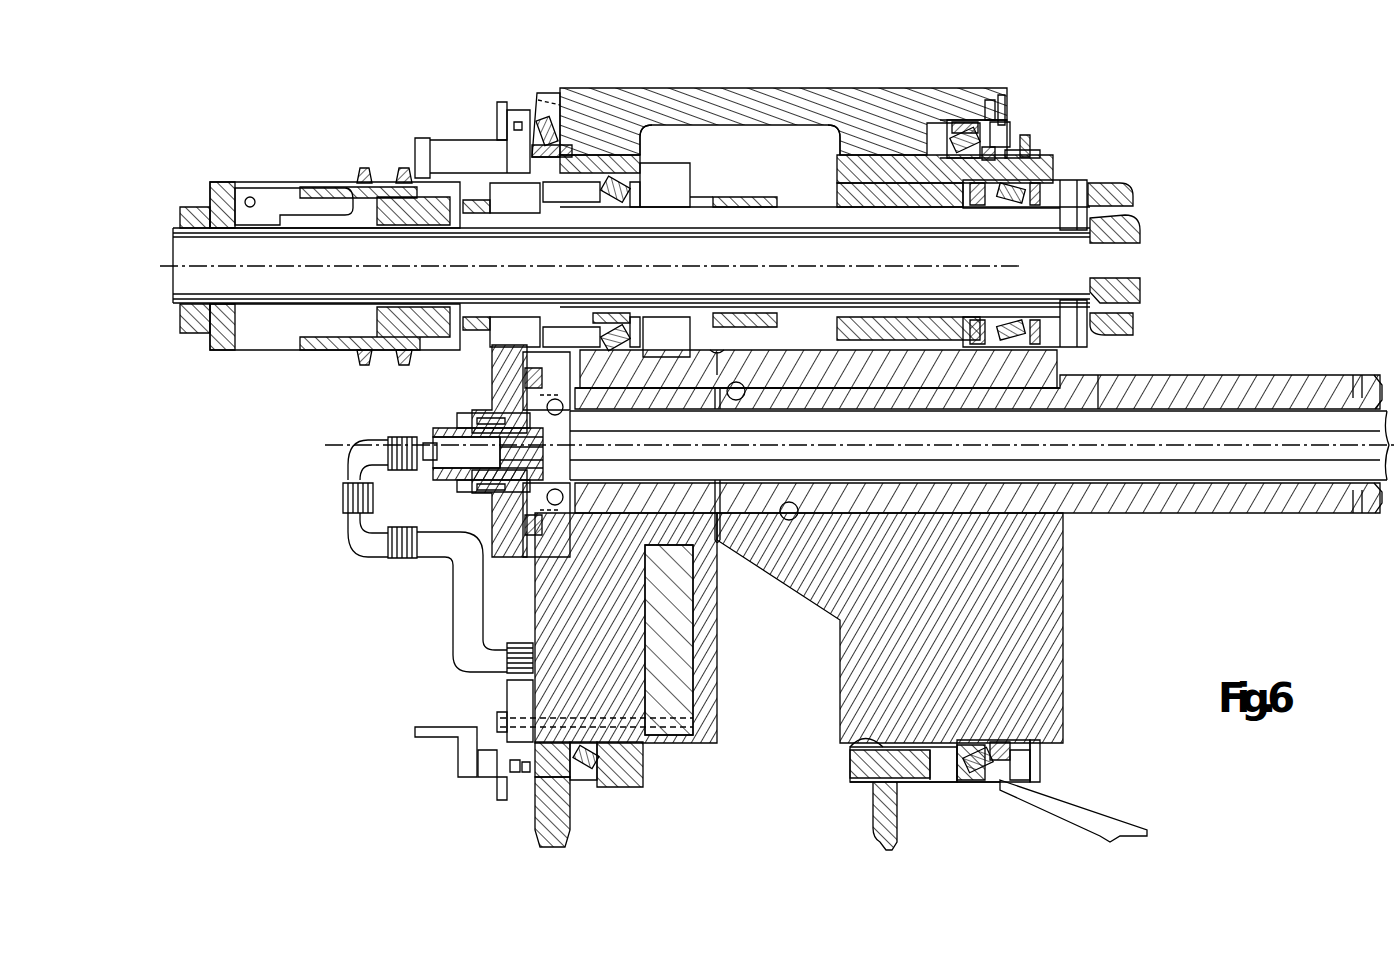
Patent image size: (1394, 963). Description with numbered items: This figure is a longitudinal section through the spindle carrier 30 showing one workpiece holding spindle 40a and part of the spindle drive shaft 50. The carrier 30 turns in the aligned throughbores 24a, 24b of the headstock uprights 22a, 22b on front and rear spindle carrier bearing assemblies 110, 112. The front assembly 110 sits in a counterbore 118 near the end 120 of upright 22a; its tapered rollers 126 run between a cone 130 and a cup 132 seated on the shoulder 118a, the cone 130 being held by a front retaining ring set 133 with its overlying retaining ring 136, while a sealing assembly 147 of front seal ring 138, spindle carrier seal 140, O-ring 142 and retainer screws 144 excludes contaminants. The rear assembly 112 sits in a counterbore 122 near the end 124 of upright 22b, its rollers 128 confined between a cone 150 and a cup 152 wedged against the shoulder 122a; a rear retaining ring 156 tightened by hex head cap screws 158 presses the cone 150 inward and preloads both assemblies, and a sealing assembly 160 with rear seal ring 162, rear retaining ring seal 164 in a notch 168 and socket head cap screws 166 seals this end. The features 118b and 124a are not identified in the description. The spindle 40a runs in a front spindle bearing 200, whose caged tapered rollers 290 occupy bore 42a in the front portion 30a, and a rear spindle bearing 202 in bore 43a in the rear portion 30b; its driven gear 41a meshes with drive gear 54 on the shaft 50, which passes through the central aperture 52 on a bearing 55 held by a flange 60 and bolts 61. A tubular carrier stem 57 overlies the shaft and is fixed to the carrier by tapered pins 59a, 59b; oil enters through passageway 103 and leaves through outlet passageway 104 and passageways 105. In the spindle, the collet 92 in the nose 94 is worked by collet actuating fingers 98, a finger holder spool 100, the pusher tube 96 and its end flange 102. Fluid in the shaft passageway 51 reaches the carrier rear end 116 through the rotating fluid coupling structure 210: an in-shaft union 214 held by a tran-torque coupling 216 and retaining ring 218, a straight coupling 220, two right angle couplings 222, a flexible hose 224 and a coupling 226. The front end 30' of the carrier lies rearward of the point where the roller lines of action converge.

The upright 22a is at (862, 117).
The upright 22b is at (623, 112).
The throughbore 24a is at (877, 735).
The throughbore 24b is at (640, 160).
The spindle carrier 30 is at (856, 424).
The front end of the spindle carrier 30' is at (1089, 545).
The front portion of the spindle carrier 30a is at (1042, 152).
The rear portion of the spindle carrier 30b is at (700, 168).
The spindle 40a is at (320, 165).
The driven gear 41a is at (512, 195).
The bore 42a is at (875, 157).
The bore 43a is at (622, 195).
The spindle drive shaft 50 is at (1268, 375).
The passageway 51 is at (1180, 450).
The central aperture 52 is at (890, 385).
The drive gear 54 is at (492, 372).
The bearing 55 is at (570, 393).
The spindle drive shaft carrier stem 57 is at (1187, 392).
The tapered pin 59a is at (793, 520).
The tapered pin 59b is at (745, 388).
The flange 60 is at (645, 577).
The bolts 61 is at (553, 378).
The collet 92 is at (1140, 228).
The spindle nose 94 is at (1128, 192).
The pusher tube 96 is at (178, 230).
The collet actuating fingers 98 is at (273, 200).
The finger holder spool 100 is at (383, 180).
The pusher tube end flange 102 is at (182, 207).
The lubricating oil passageway 103 is at (720, 352).
The outlet passageway 104 is at (717, 542).
The passageways 105 is at (1358, 385).
The front spindle carrier bearing assembly 110 is at (1090, 92).
The rear spindle carrier bearing assembly 112 is at (520, 812).
The rear end of the spindle carrier 116 is at (510, 648).
The counterbore 118 is at (950, 125).
The shoulder 118a is at (970, 780).
The race portion 118b is at (983, 780).
The end of the headstock upright 120 is at (1003, 95).
The counterbore 122 is at (585, 110).
The shoulder 122a is at (587, 780).
The end of the headstock upright 124 is at (545, 112).
The cavity 124a is at (845, 157).
The tapered rollers 126 is at (1000, 125).
The tapered rollers 128 is at (548, 140).
The cone 130 is at (975, 160).
The cup 132 is at (955, 125).
The front retaining ring set 133 is at (983, 737).
The retaining ring 136 is at (1010, 773).
The front seal ring 138 is at (1010, 130).
The spindle carrier seal 140 is at (1023, 150).
The O-ring 142 is at (1000, 787).
The retainer screws 144 is at (1012, 110).
The sealing assembly 147 is at (1035, 781).
The cone 150 is at (497, 720).
The cup 152 is at (557, 753).
The rear retaining ring 156 is at (507, 692).
The hex head cap screws 158 is at (513, 691).
The sealing assembly 160 is at (493, 105).
The rear seal ring 162 is at (512, 128).
The rear retaining ring seal 164 is at (492, 106).
The socket head cap screws 166 is at (512, 122).
The notch 168 is at (520, 767).
The front spindle bearing 200 is at (1047, 304).
The rear spindle bearing 202 is at (627, 170).
The rotating fluid coupling structure 210 is at (340, 546).
The in-shaft union 214 is at (457, 440).
The tran-torque coupling 216 is at (467, 487).
The retaining ring 218 is at (430, 465).
The straight coupling 220 is at (428, 448).
The right angle couplings 222 is at (357, 522).
The flexible hose 224 is at (432, 550).
The coupling 226 is at (520, 644).
The caged tapered rollers 290 is at (1005, 215).